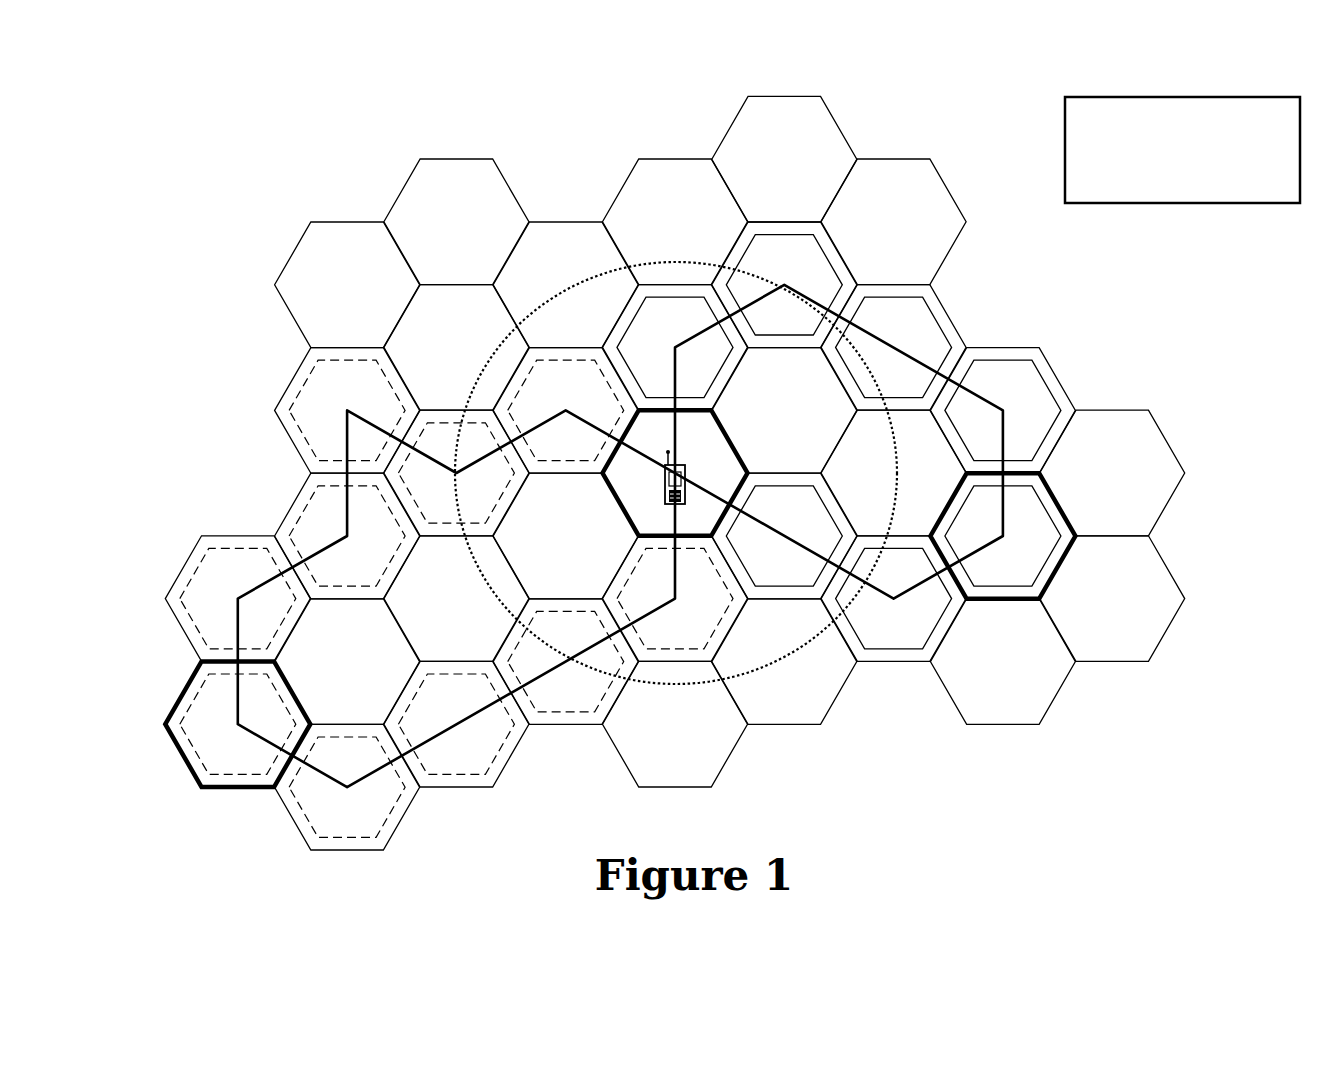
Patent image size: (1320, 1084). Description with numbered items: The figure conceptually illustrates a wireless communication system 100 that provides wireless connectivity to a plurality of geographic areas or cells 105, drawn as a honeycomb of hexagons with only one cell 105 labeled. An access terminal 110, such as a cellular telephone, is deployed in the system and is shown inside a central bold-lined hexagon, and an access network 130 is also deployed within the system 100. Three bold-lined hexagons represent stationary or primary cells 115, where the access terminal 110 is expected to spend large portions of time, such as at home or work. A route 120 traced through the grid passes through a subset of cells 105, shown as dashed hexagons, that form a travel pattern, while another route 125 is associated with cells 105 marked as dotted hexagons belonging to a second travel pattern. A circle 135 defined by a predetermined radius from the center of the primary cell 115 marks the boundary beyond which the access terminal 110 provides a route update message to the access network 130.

The wireless communication system 100 is at (210, 150).
The cell 105 is at (463, 159).
The access terminal 110 is at (686, 472).
The stationary cell 115 is at (734, 447).
The route 120 is at (423, 745).
The route 125 is at (975, 393).
The access network 130 is at (1182, 150).
The circle 135 is at (607, 274).